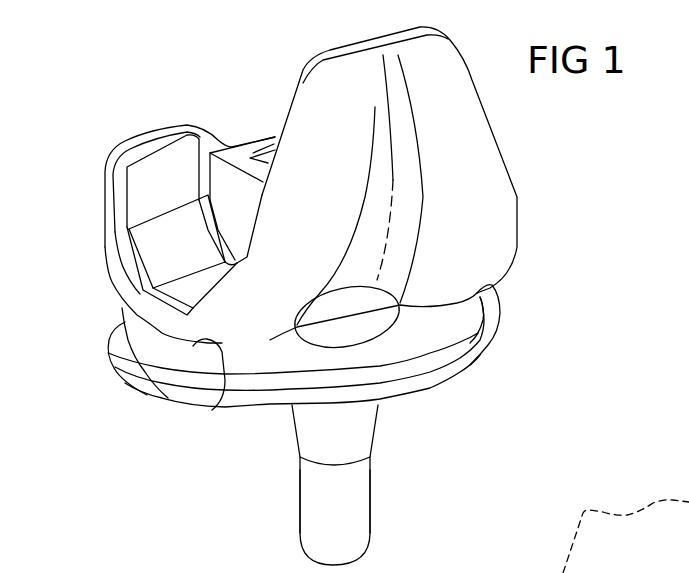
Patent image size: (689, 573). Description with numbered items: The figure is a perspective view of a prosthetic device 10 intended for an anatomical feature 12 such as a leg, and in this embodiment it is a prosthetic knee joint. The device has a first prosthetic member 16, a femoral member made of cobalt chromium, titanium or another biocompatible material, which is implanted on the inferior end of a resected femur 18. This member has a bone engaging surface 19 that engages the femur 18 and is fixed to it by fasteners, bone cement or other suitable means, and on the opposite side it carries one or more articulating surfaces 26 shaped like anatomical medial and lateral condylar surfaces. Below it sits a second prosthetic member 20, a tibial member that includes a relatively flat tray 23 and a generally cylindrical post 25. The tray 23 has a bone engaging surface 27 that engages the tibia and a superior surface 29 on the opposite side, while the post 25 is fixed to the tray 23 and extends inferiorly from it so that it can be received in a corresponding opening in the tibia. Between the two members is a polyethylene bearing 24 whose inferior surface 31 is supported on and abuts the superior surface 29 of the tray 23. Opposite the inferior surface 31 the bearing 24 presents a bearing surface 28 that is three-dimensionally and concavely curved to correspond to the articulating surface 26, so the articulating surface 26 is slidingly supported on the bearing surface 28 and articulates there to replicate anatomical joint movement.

The prosthetic device 10 is at (125, 113).
The anatomical feature 12 is at (545, 558).
The first prosthetic member 16 is at (422, 63).
The femur 18 is at (537, 572).
The bone engaging surface 19 is at (187, 254).
The second prosthetic member 20 is at (273, 407).
The tray 23 is at (112, 355).
The bearing 24 is at (397, 345).
The post 25 is at (320, 493).
The articulating surface 26 is at (140, 387).
The bone engaging surface 27 is at (167, 397).
The bearing surface 28 is at (212, 410).
The superior surface 29 is at (125, 333).
The inferior surface 31 is at (413, 360).